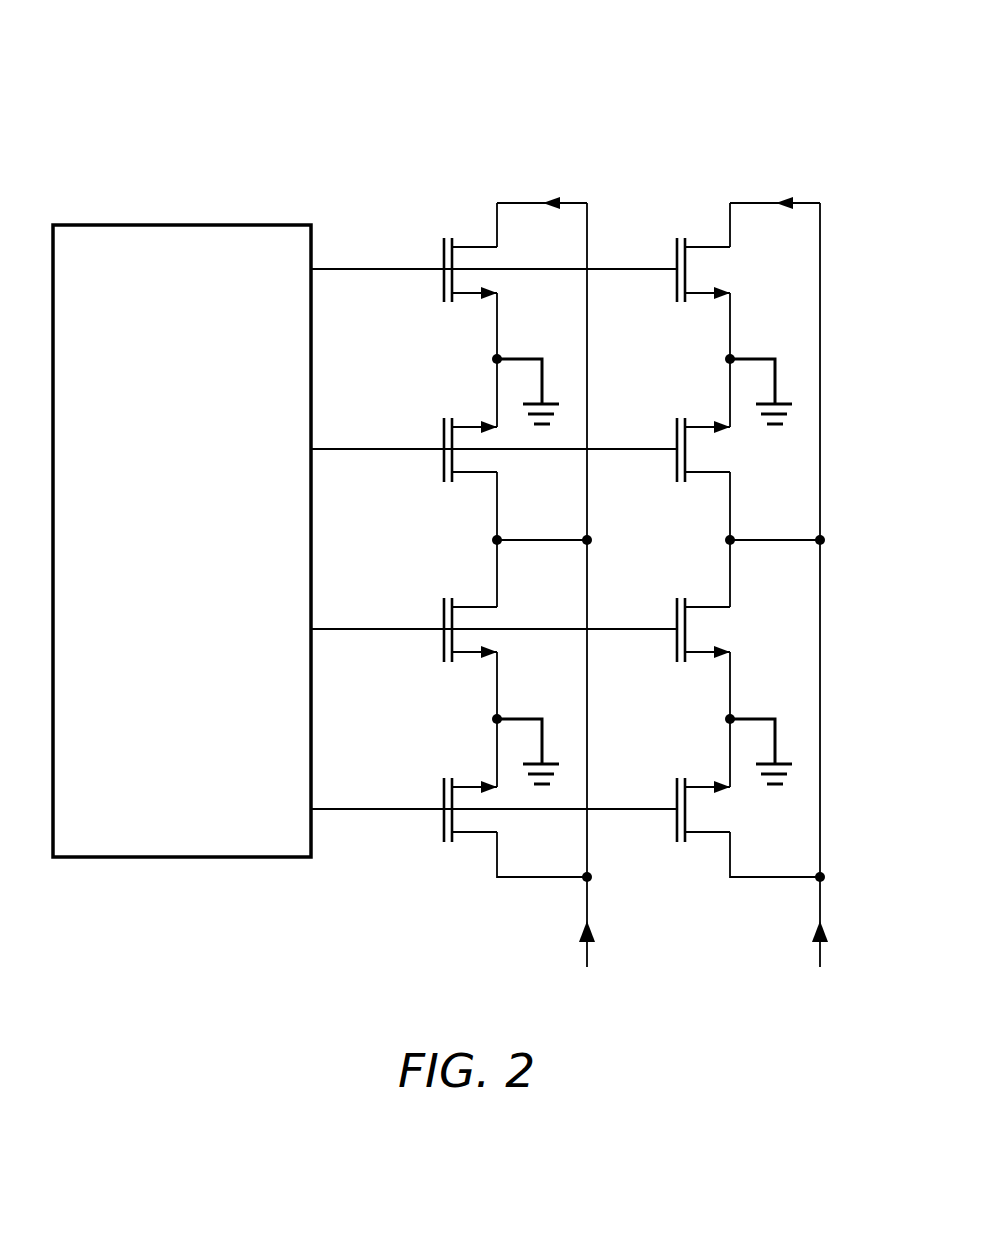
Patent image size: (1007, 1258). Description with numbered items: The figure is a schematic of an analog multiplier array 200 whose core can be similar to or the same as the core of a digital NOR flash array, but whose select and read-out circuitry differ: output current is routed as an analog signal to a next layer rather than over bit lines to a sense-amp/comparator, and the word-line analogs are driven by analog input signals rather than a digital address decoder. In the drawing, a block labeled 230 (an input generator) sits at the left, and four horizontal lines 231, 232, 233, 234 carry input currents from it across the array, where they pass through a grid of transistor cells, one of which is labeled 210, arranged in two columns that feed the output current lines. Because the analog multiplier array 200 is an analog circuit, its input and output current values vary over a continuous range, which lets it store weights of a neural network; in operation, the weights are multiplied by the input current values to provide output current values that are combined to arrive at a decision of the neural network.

The analog multiplier array 200 is at (727, 112).
The transistor cell 210 is at (457, 198).
The input generator 230 is at (150, 865).
The input line IIn0 231 is at (384, 233).
The input line IIn1 232 is at (384, 413).
The input line IIn2 233 is at (384, 593).
The input line IIn3 234 is at (384, 773).